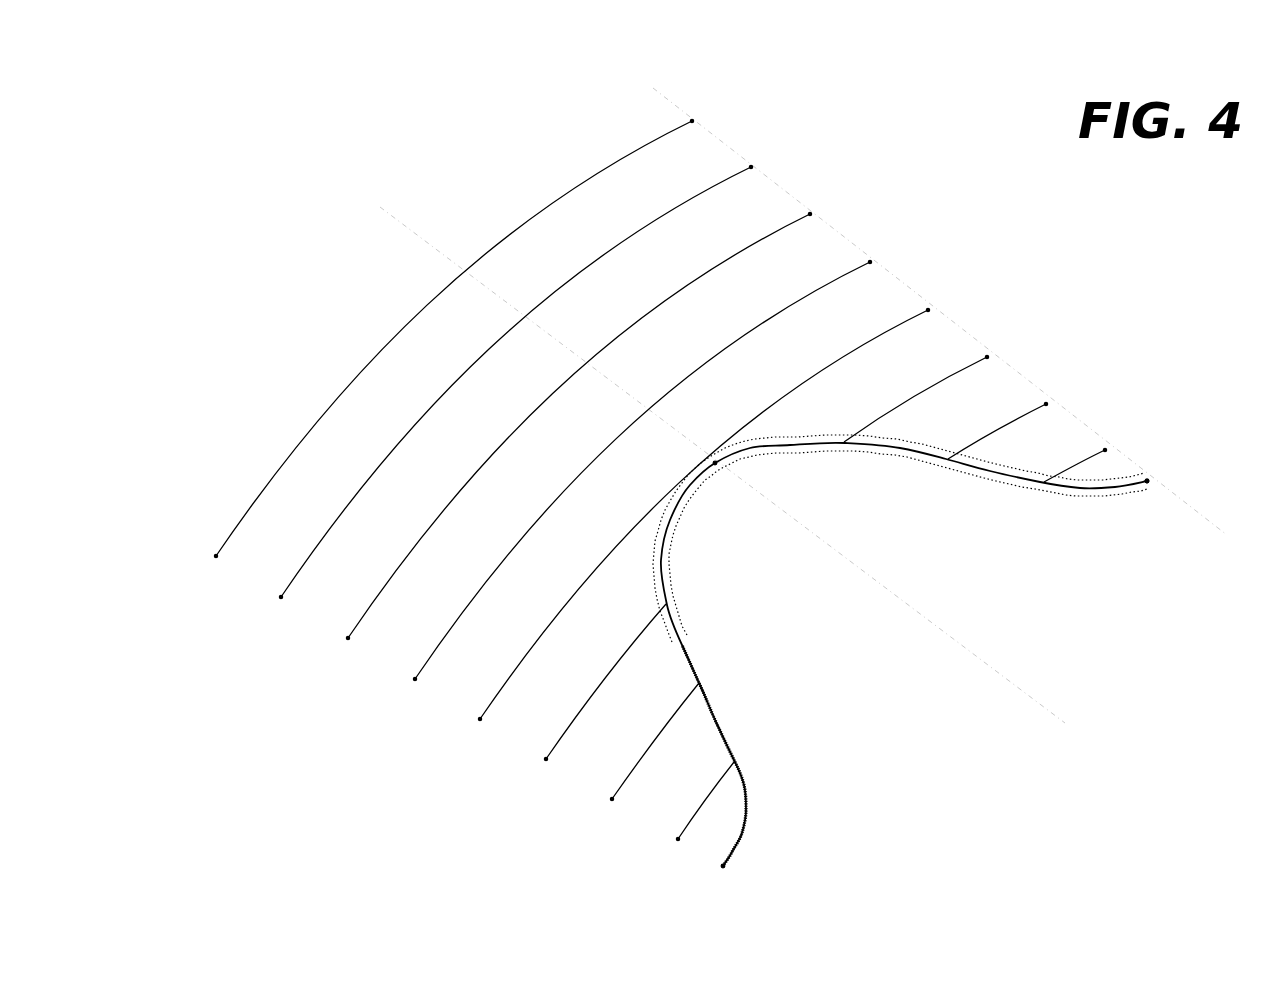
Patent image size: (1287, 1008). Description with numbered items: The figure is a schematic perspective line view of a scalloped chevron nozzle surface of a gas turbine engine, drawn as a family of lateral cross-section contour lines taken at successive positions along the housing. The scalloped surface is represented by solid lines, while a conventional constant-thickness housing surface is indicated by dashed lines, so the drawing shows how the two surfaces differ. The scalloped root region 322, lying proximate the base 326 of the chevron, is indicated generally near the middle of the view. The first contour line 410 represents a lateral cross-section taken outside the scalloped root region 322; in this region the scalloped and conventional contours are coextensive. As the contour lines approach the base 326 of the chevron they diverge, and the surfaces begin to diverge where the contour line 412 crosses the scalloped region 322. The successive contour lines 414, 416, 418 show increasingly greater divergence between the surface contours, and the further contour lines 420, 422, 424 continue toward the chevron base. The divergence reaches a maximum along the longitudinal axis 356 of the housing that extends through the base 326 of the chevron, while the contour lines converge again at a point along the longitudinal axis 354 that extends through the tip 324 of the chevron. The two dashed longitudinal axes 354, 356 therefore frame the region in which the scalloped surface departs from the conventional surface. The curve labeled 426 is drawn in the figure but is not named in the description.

The scalloped root region 322 is at (662, 403).
The tip 324 is at (1187, 507).
The base 326 is at (714, 467).
The longitudinal axis 354 is at (852, 240).
The longitudinal axis 356 is at (985, 661).
The first contour line 410 is at (243, 525).
The contour line 412 is at (294, 580).
The contour line 414 is at (368, 613).
The contour line 416 is at (428, 659).
The contour line 418 is at (497, 702).
The contour line 420 is at (562, 739).
The contour line 422 is at (628, 776).
The contour line 424 is at (696, 813).
The ninth section curve 426 is at (740, 845).